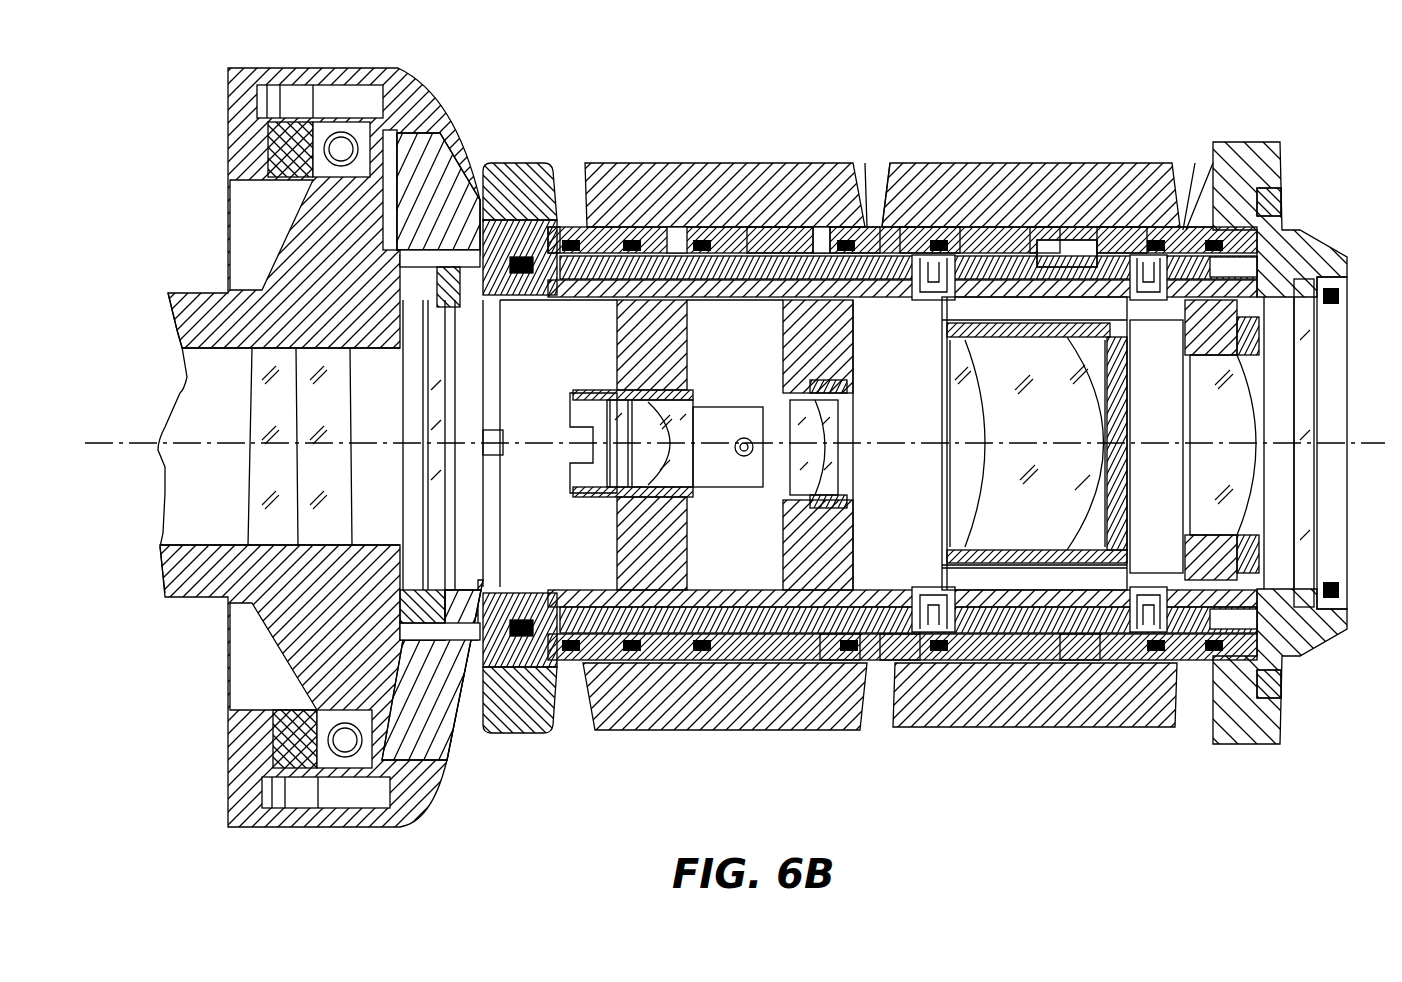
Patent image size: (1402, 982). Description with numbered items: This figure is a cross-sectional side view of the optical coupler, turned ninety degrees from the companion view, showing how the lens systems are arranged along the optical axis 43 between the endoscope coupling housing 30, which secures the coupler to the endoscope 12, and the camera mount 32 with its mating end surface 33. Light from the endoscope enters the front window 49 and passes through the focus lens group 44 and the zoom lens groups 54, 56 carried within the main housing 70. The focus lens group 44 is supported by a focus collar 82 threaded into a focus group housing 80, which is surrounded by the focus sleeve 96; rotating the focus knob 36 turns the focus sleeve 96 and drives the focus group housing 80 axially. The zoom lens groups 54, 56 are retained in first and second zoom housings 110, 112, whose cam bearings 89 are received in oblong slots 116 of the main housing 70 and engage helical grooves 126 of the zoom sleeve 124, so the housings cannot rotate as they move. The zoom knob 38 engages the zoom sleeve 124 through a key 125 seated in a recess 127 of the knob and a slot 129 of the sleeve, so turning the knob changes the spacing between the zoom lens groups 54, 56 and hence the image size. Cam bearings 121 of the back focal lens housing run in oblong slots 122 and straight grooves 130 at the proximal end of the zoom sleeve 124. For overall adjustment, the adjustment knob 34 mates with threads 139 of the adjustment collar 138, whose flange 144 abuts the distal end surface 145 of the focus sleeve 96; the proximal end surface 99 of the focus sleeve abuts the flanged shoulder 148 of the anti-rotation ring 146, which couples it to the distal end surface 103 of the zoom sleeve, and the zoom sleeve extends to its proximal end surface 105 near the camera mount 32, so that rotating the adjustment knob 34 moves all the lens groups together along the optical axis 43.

The endoscope 12 is at (175, 322).
The endoscope coupling housing 30 is at (440, 98).
The camera mount 32 is at (1290, 135).
The mating end surface 33 is at (1298, 733).
The adjustment knob 34 is at (522, 162).
The focus knob 36 is at (717, 725).
The zoom knob 38 is at (1040, 720).
The optical axis 43 is at (126, 447).
The focus lens group 44 is at (704, 494).
The front window 49 is at (437, 437).
The zoom lens group 54 is at (850, 483).
The zoom lens group 56 is at (930, 410).
The main housing 70 is at (728, 595).
The focus group housing 80 is at (616, 538).
The focus collar 82 is at (577, 493).
The cam bearings 89 is at (934, 328).
The focus sleeve 96 is at (750, 300).
The proximal end surface 99 is at (775, 245).
The distal end surface 103 is at (845, 240).
The proximal end surface 105 is at (1186, 240).
The first zoom housing 110 is at (792, 355).
The second zoom housing 112 is at (942, 552).
The oblong slots 116 is at (935, 250).
The cam bearings 121 is at (1153, 330).
The oblong slots 122 is at (1170, 235).
The zoom sleeve 124 is at (1077, 720).
The key 125 is at (1055, 260).
The helical grooves 126 is at (897, 720).
The recess 127 is at (1040, 265).
The slot 129 is at (1080, 260).
The straight grooves 130 is at (1178, 700).
The adjustment collar 138 is at (676, 240).
The threads 139 is at (588, 240).
The flange 144 is at (560, 230).
The distal end surface 145 is at (598, 300).
The anti-rotation ring 146 is at (885, 235).
The flanged shoulder 148 is at (833, 720).